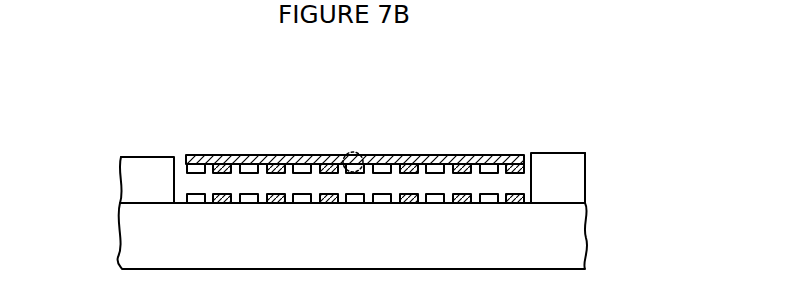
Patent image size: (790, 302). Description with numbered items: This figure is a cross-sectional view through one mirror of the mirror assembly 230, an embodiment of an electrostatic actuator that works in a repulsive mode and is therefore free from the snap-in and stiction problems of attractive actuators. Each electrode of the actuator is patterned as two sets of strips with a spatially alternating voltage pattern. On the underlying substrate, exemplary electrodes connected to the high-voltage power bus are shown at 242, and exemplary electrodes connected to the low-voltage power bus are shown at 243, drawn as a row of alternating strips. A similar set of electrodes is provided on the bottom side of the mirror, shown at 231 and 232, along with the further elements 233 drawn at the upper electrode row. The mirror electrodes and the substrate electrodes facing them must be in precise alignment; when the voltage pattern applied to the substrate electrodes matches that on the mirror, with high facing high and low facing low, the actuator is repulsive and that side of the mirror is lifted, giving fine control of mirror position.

The mirror assembly 230 is at (83, 130).
The mirror bottom-side electrodes 231 is at (514, 166).
The mirror bottom-side electrodes 232 is at (202, 157).
The open electrode elements (upper row) 233 is at (489, 166).
The electrodes connected to the V_H power bus 242 is at (331, 201).
The electrodes connected to the V_L power bus 243 is at (304, 201).